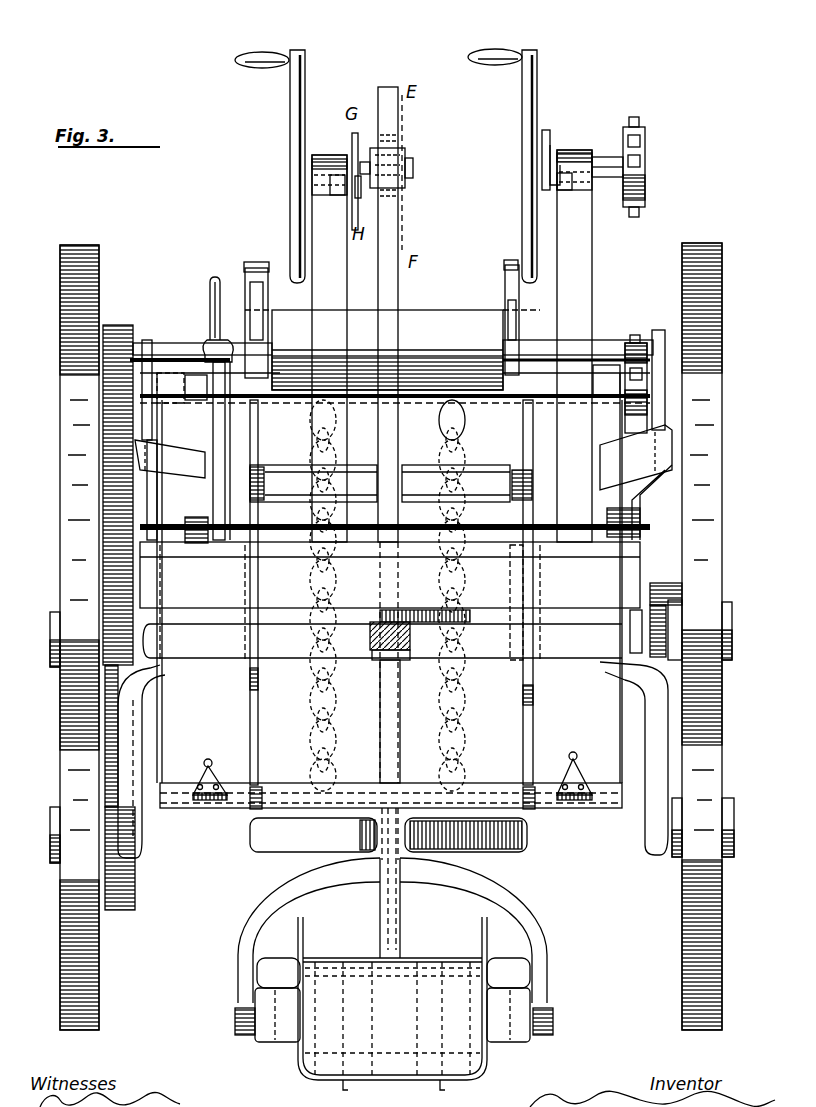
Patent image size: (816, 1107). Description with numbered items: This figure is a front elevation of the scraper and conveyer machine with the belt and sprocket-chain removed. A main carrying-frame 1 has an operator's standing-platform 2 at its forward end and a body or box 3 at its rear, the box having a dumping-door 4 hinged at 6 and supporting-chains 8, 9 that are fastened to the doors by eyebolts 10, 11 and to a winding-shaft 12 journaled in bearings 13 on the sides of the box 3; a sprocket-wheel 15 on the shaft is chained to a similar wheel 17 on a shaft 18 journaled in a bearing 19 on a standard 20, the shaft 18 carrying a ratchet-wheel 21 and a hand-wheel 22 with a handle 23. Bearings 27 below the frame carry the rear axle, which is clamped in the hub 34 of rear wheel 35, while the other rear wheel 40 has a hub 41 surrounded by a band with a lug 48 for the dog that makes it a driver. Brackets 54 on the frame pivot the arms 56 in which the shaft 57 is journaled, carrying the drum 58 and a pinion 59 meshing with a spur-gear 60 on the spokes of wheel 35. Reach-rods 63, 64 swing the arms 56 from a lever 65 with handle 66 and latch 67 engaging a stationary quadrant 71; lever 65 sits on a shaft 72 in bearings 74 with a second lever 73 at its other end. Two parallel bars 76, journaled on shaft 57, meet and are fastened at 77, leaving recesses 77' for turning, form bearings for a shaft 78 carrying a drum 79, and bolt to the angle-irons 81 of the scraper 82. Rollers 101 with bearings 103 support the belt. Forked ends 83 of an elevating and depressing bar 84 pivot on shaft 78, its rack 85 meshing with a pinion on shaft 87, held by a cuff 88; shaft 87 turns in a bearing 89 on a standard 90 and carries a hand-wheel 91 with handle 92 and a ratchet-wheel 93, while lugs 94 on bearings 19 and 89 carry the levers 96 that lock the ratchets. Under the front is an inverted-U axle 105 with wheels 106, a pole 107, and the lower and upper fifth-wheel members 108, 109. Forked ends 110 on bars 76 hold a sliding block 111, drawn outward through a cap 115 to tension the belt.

The main carrying-frame 1 is at (404, 582).
The operator's standing-platform 2 is at (576, 552).
The body or box portion 3 is at (174, 610).
The dumping-door 4 is at (187, 800).
The hinge 6 is at (200, 790).
The supporting-chain 8 is at (338, 686).
The supporting-chain 9 is at (467, 684).
The eyebolt 10 is at (338, 771).
The eyebolt 11 is at (468, 771).
The winding-shaft 12 is at (198, 400).
The bearing 13 is at (173, 400).
The sprocket-wheel 15 is at (637, 343).
The sprocket-wheel 17 is at (648, 158).
The shaft 18 is at (612, 178).
The bearing 19 is at (586, 157).
The standard 20 is at (574, 346).
The ratchet-wheel 21 is at (557, 150).
The hand-wheel 22 is at (523, 120).
The handle 23 is at (490, 63).
The bearing 27 is at (150, 632).
The hub 34 is at (55, 624).
The rear wheel 35 is at (79, 637).
The rear wheel 40 is at (702, 636).
The hub 41 is at (733, 620).
The lug 48 is at (670, 586).
The bracket 54 is at (160, 520).
The arm 56 is at (145, 418).
The shaft 57 is at (185, 350).
The drum 58 is at (387, 350).
The pinion 59 is at (120, 326).
The spur-gear 60 is at (132, 868).
The reach-rod 63 is at (170, 459).
The reach-rod 64 is at (636, 457).
The lever 65 is at (323, 409).
The handle 66 is at (212, 280).
The latch 67 is at (212, 306).
The stationary quadrant 71 is at (330, 456).
The shaft 72 is at (294, 540).
The second lever 73 is at (640, 492).
The bearing 74 is at (187, 530).
The parallel bars 76 is at (526, 421).
The fastening point 77 is at (371, 883).
The recess 77' is at (375, 889).
The shaft 78 is at (235, 1020).
The drum 79 is at (278, 1046).
The reinforcing angle-iron 81 is at (410, 1081).
The scraper 82 is at (392, 998).
The forked end 83 is at (268, 902).
The elevating and depressing bar 84 is at (388, 740).
The rack 85 is at (386, 95).
The shaft 87 is at (408, 164).
The cuff 88 is at (408, 184).
The bearing 89 is at (331, 155).
The standard 90 is at (329, 348).
The hand-wheel 91 is at (290, 212).
The handle 92 is at (258, 66).
The ratchet-wheel 93 is at (361, 194).
The lug 94 is at (336, 195).
The lever 96 is at (545, 130).
The roller 101 is at (456, 483).
The bearing 103 is at (322, 470).
The axle 105 is at (546, 652).
The wheel 106 is at (392, 817).
The pole 107 is at (410, 652).
The lower member of fifth-wheel 108 is at (370, 628).
The upper member of fifth-wheel 109 is at (374, 612).
The forked end 110 is at (280, 305).
The block 111 is at (263, 330).
The cap 115 is at (258, 262).